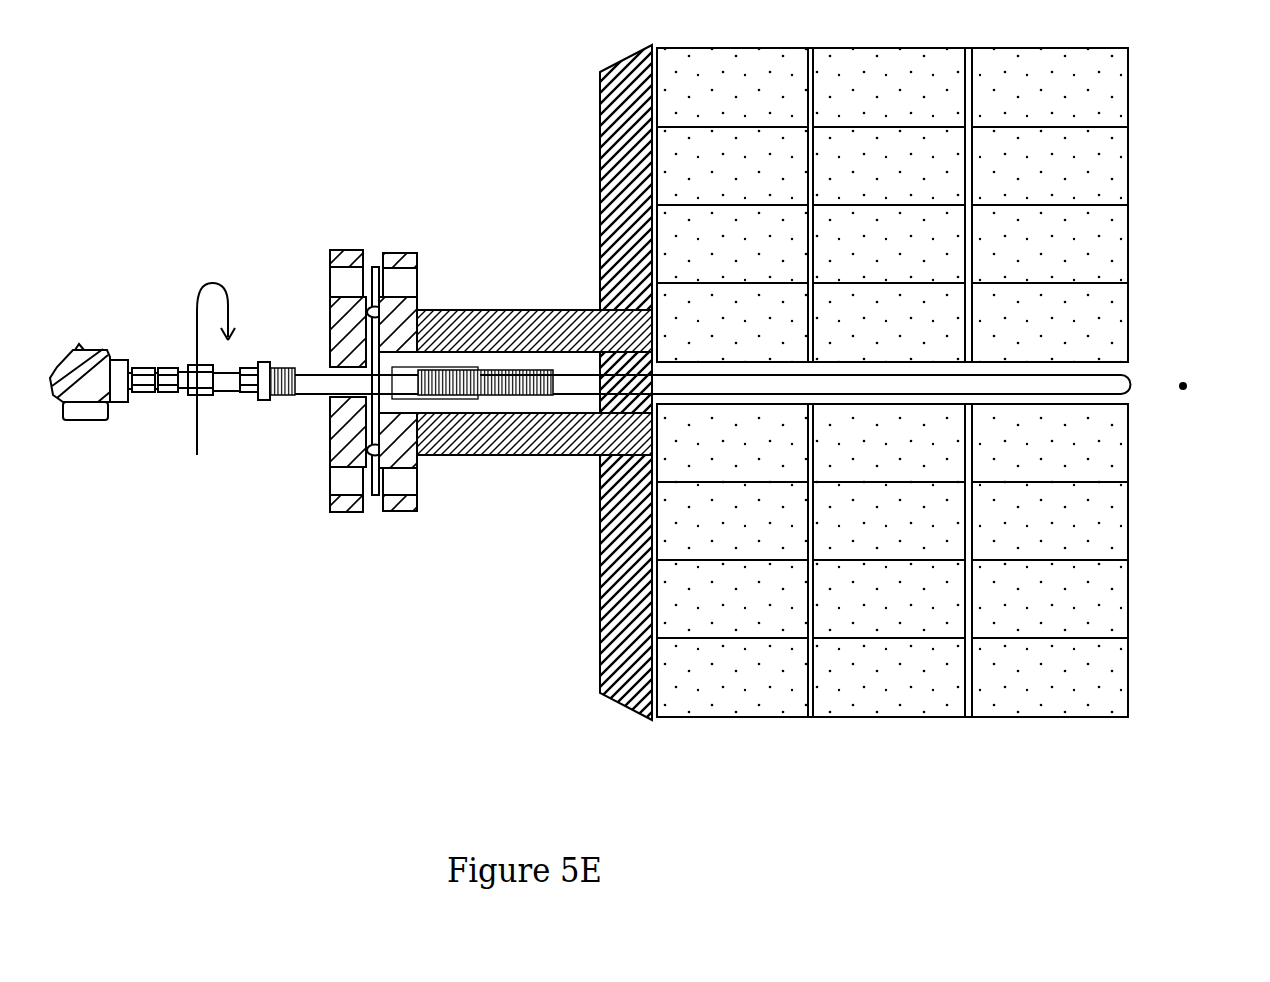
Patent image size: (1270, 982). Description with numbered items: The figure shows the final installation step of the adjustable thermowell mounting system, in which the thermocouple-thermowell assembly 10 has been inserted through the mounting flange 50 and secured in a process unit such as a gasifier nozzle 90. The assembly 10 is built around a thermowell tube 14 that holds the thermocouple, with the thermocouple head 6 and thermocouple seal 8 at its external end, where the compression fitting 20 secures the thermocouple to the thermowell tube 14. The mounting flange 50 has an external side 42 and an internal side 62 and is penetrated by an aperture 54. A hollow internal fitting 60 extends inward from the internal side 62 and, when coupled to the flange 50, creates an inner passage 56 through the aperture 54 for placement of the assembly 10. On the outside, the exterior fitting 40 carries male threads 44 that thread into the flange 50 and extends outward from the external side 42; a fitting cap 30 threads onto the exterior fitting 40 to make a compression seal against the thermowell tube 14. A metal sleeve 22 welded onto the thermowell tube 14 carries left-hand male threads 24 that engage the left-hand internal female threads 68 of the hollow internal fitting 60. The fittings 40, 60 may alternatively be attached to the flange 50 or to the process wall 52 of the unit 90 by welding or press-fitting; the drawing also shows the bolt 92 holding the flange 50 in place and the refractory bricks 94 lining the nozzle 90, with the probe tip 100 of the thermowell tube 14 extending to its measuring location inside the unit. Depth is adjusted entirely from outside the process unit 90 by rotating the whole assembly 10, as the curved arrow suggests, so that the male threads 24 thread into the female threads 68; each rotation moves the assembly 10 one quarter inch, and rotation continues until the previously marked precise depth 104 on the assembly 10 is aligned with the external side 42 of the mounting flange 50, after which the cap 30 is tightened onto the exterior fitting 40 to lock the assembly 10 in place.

The thermocouple head 6 is at (80, 346).
The thermocouple seal 8 is at (150, 397).
The thermocouple-thermowell assembly 10 is at (242, 256).
The thermowell tube 14 is at (222, 397).
The compression fitting 20 is at (183, 400).
The metal sleeve 22 is at (567, 387).
The male threads 24 is at (510, 375).
The fitting cap 30 is at (237, 397).
The exterior fitting 40 is at (248, 365).
The external side 42 is at (330, 263).
The male threads 44 is at (268, 362).
The mounting flange 50 is at (330, 508).
The process wall 52 is at (597, 672).
The aperture 54 is at (323, 398).
The inner passage 56 is at (453, 455).
The hollow internal fitting 60 is at (405, 368).
The internal side 62 is at (390, 262).
The internal female threads 68 is at (456, 372).
The gasifier nozzle 90 is at (818, 770).
The bolt 92 is at (380, 512).
The refractory bricks 94 is at (1065, 683).
The probe tip 100 is at (1183, 388).
The precise depth 104 is at (312, 397).